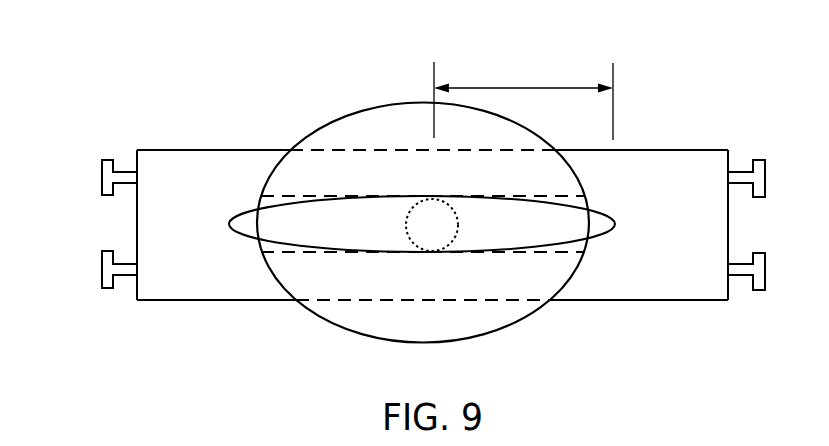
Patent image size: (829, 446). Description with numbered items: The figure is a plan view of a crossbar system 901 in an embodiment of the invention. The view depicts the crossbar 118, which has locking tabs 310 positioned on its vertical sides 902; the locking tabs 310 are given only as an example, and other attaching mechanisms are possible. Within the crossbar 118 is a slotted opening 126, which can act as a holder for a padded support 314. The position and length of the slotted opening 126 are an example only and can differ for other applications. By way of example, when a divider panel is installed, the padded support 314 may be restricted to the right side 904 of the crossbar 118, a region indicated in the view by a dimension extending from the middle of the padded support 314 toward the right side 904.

The crossbar system 901 is at (181, 39).
The vertical sides 902 is at (137, 230).
The right side 904 is at (535, 84).
The locking tabs 310 is at (107, 175).
The padded support 314 is at (383, 323).
The slotted opening 126 is at (600, 228).
The crossbar 118 is at (702, 292).